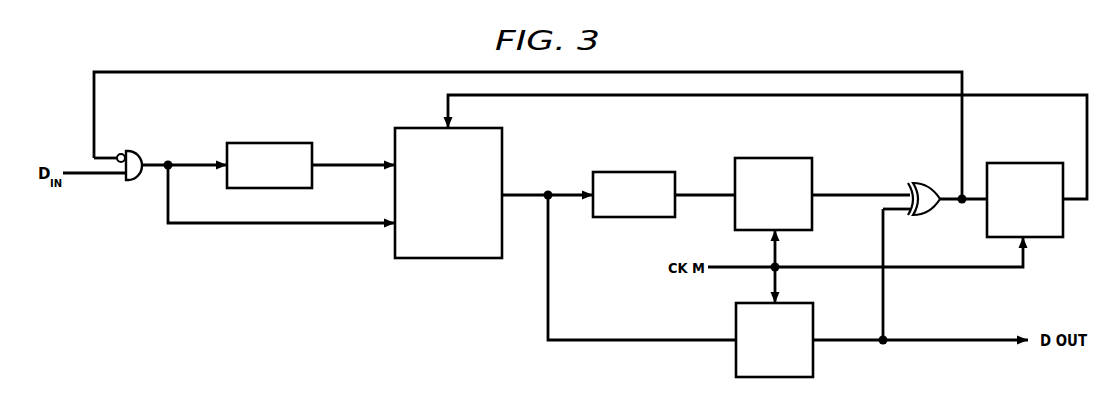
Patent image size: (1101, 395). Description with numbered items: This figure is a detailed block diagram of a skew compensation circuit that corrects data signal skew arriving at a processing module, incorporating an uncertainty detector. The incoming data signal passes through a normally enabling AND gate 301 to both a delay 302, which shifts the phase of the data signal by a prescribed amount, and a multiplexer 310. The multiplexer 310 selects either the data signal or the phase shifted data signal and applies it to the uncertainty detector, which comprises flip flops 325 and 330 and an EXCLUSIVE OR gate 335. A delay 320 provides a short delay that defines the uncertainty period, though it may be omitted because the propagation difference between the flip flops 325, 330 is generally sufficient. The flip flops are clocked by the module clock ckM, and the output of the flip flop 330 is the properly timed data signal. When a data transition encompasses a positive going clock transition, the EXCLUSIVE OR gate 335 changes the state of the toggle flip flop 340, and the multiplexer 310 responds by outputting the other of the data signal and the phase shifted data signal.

The AND gate 301 is at (137, 151).
The delay 302 is at (265, 143).
The multiplexer 310 is at (425, 128).
The delay 320 is at (630, 172).
The flip flop 325 is at (770, 158).
The flip flop 330 is at (736, 357).
The EXCLUSIVE OR gate 335 is at (934, 159).
The toggle flip flop 340 is at (1022, 163).